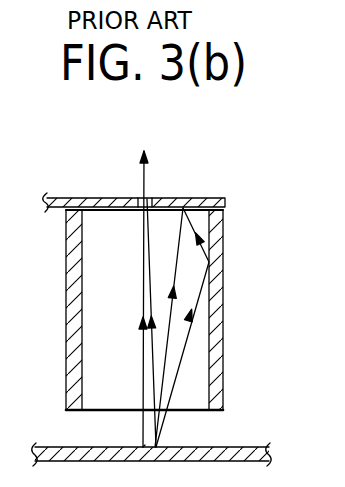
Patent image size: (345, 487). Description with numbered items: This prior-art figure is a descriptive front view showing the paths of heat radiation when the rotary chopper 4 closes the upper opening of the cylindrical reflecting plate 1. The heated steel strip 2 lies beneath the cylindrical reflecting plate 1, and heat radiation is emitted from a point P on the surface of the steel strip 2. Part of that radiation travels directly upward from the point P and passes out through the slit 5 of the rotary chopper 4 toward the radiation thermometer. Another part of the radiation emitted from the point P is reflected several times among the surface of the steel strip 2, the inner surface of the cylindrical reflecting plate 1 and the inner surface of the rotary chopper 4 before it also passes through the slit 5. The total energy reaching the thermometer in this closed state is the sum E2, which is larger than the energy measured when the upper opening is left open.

The cylindrical reflecting plate 1 is at (223, 287).
The steel strip 2 is at (240, 447).
The rotary chopper 4 is at (182, 208).
The slit 5 is at (141, 198).
The total sum of energy E2 is at (146, 286).
The point on the surface of the steel strip P is at (143, 446).